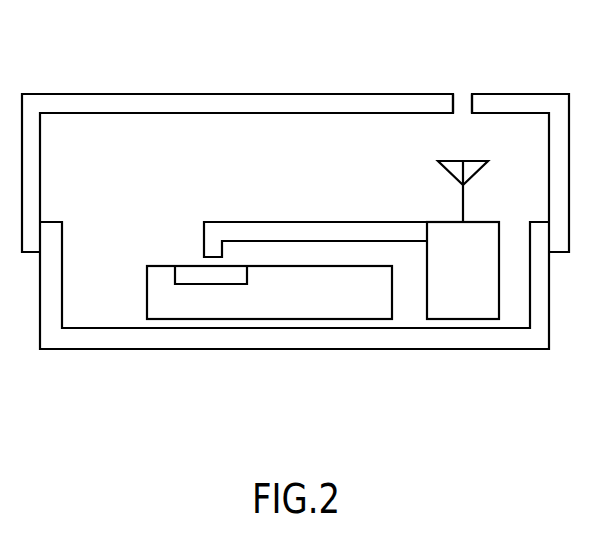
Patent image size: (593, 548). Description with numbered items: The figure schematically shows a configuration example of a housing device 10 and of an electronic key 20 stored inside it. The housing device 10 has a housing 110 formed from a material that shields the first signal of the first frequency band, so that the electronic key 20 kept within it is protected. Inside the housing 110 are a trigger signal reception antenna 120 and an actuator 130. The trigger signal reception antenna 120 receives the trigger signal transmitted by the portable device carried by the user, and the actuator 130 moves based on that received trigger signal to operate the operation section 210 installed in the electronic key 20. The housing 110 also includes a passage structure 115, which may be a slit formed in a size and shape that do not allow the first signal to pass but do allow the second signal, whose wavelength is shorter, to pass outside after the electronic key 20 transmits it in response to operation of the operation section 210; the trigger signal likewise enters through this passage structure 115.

The housing device 10 is at (308, 45).
The housing 110 is at (82, 91).
The passage structure 115 is at (462, 88).
The trigger signal reception antenna 120 is at (425, 160).
The actuator 130 is at (227, 210).
The electronic key 20 is at (146, 288).
The operation section 210 is at (188, 262).